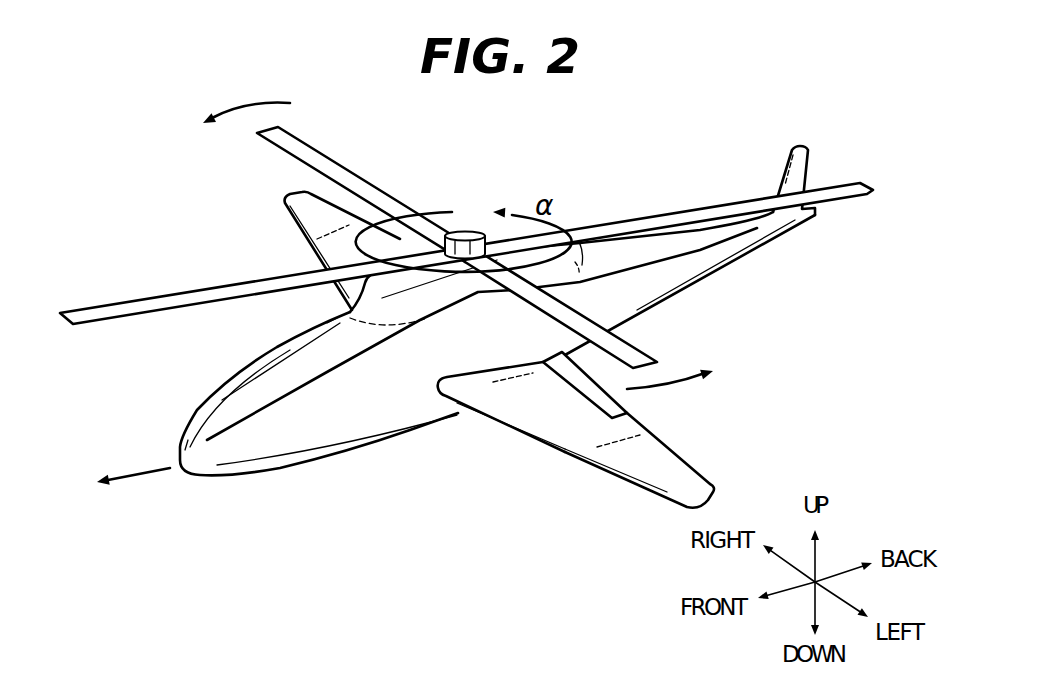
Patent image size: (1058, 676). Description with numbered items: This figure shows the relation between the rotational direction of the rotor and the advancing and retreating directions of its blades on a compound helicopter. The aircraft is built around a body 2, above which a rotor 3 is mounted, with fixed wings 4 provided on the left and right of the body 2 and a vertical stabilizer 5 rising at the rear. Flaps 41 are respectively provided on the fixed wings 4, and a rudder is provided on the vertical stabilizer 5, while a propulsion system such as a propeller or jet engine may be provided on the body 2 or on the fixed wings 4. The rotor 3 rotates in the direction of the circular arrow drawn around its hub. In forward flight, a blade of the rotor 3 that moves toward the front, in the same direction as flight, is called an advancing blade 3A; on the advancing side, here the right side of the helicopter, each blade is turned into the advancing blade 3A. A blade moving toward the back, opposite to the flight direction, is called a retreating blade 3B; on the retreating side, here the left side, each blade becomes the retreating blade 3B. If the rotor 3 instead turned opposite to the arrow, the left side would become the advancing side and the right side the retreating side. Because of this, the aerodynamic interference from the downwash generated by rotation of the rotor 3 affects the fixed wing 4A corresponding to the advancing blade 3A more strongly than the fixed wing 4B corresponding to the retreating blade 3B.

The body 2 is at (343, 437).
The rotor 3 is at (154, 298).
The advancing blade 3A is at (350, 168).
The retreating blade 3B is at (632, 352).
The fixed wings 4 is at (518, 428).
The fixed wing corresponding to the advancing blade 4A is at (305, 212).
The fixed wing corresponding to the retreating blade 4B is at (663, 453).
The flaps 41 is at (585, 387).
The vertical stabilizer 5 is at (807, 163).